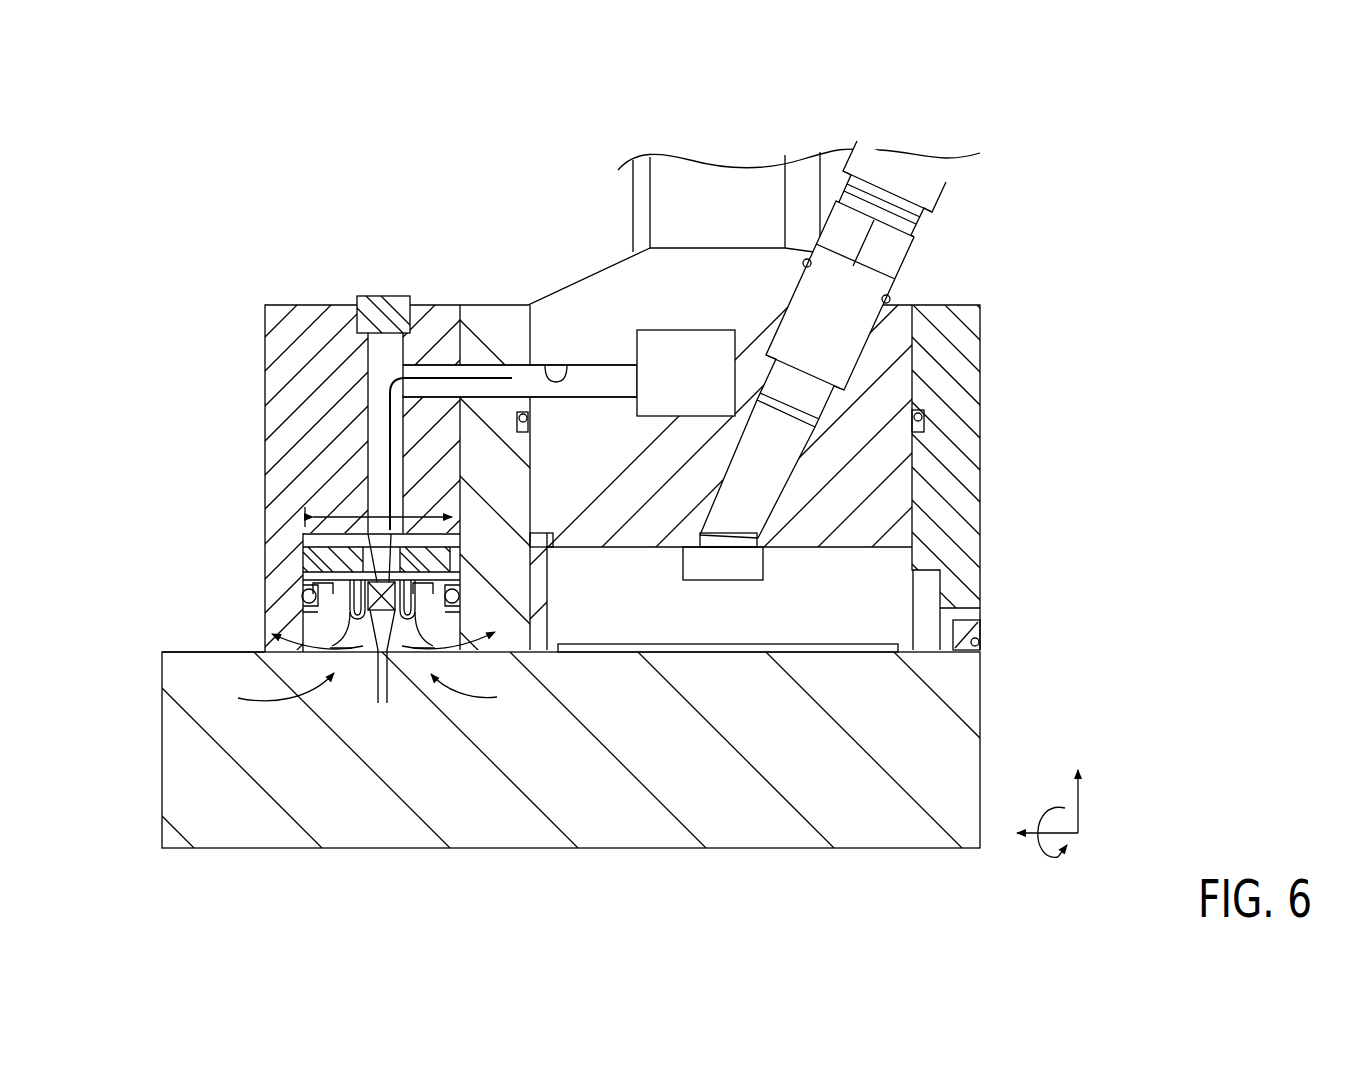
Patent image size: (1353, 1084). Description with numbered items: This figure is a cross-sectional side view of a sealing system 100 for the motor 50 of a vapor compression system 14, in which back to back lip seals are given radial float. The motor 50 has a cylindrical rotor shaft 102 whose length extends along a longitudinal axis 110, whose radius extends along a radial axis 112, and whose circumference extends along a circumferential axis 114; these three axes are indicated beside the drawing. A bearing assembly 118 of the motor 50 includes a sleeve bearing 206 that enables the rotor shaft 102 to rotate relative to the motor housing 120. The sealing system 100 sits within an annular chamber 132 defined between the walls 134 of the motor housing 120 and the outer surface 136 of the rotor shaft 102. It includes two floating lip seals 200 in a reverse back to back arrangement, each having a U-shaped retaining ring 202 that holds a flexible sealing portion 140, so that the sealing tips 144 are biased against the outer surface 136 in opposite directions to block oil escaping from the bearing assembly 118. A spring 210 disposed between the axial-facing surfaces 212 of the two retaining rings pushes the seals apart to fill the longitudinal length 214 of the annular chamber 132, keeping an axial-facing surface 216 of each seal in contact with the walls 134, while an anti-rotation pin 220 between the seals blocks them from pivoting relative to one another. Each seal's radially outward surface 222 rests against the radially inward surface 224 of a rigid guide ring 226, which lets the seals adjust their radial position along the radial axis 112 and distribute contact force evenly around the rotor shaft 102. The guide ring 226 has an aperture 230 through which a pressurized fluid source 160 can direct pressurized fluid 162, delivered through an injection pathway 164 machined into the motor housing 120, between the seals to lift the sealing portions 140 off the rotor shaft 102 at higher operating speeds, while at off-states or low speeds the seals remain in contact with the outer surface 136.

The vapor compression system 14 is at (714, 120).
The motor 50 is at (592, 133).
The sealing system 100 is at (455, 262).
The rotor shaft 102 is at (383, 829).
The longitudinal axis 110 is at (1072, 817).
The radial axis 112 is at (1081, 808).
The circumferential axis 114 is at (1045, 855).
The bearing assembly 118 is at (735, 679).
The motor housing 120 is at (984, 419).
The annular chamber 132 is at (333, 638).
The walls 134 is at (301, 604).
The outer surface 136 is at (187, 648).
The sealing portion 140 is at (358, 616).
The sealing tips 144 is at (318, 604).
The pressurized fluid source 160 is at (708, 386).
The pressurized fluid 162 is at (485, 378).
The injection pathway 164 is at (574, 362).
The floating lip seals 200 is at (368, 692).
The U-shaped retaining ring 202 is at (350, 590).
The sleeve bearing 206 is at (748, 623).
The spring 210 is at (386, 529).
The axial-facing surfaces 212 is at (386, 658).
The longitudinal length 214 is at (366, 515).
The axial-facing surface 216 is at (314, 586).
The anti-rotation pin 220 is at (425, 549).
The radially outward surface 222 is at (318, 552).
The radially inward surface 224 is at (343, 530).
The guide ring 226 is at (306, 570).
The aperture 230 is at (408, 538).